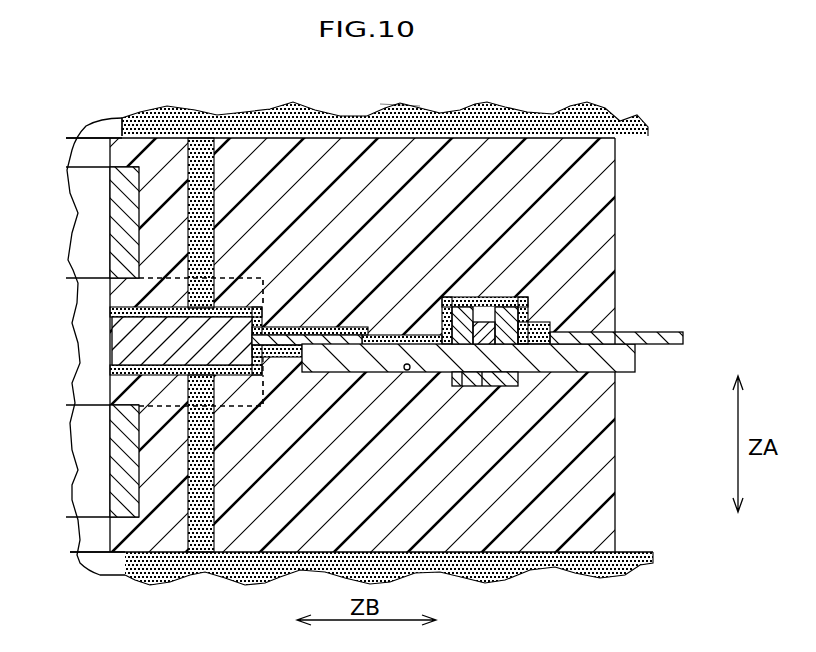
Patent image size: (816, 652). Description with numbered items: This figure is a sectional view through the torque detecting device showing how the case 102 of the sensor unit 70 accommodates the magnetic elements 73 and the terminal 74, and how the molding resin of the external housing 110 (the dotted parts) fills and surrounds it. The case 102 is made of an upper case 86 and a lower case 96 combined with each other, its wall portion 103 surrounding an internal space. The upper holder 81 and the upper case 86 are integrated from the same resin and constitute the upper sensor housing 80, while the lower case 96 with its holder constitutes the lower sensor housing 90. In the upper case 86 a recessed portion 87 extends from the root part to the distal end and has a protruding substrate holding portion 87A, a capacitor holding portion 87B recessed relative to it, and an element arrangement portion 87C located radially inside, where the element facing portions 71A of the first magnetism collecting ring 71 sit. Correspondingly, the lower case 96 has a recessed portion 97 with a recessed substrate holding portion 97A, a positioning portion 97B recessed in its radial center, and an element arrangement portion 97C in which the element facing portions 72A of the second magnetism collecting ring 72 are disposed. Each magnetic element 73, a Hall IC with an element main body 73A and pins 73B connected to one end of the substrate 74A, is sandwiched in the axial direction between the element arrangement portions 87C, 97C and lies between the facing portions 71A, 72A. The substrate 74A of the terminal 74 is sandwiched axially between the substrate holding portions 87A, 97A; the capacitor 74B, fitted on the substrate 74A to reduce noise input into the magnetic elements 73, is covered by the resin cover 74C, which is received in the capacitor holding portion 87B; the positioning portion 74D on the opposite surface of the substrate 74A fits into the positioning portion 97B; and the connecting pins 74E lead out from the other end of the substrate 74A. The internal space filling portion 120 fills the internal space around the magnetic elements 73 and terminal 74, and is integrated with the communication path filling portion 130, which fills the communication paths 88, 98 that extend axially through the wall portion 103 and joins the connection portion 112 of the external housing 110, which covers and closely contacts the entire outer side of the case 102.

The sensor unit 70 is at (128, 326).
The first magnetism collecting ring 71 is at (80, 212).
The element facing portions 71A is at (240, 278).
The second magnetism collecting ring 72 is at (80, 452).
The element facing portions 72A is at (263, 398).
The magnetic elements 73 is at (230, 331).
The element main body 73A is at (110, 341).
The pins 73B is at (292, 328).
The terminal 74 is at (512, 343).
The substrate 74A is at (635, 358).
The capacitor 74B is at (505, 297).
The cover 74C is at (529, 318).
The positioning portion 74D is at (510, 388).
The connecting pins 74E is at (683, 336).
The upper sensor housing 80 is at (631, 161).
The upper holder 81 is at (126, 142).
The upper case 86 is at (615, 213).
The recessed portion 87 is at (453, 286).
The substrate holding portion 87A is at (396, 325).
The capacitor holding portion 87B is at (452, 297).
The element arrangement portion 87C is at (133, 307).
The communication paths 88 is at (187, 140).
The lower sensor housing 90 is at (632, 528).
The lower case 96 is at (617, 473).
The recessed portion 97 is at (440, 409).
The substrate holding portion 97A is at (407, 370).
The positioning portion 97B is at (469, 398).
The element arrangement portion 97C is at (160, 378).
The communication paths 98 is at (190, 558).
The case 102 is at (408, 345).
The wall portion 103 is at (391, 339).
The external housing 110 is at (602, 105).
The connection portion 112 is at (488, 110).
The internal space filling portion 120 is at (290, 362).
The communication path filling portion 130 is at (220, 347).